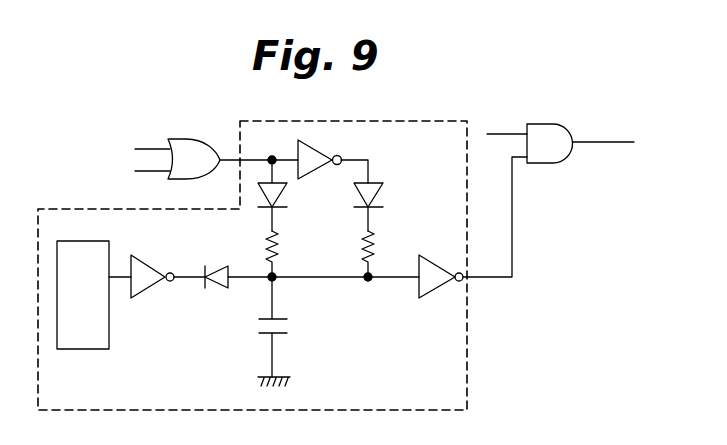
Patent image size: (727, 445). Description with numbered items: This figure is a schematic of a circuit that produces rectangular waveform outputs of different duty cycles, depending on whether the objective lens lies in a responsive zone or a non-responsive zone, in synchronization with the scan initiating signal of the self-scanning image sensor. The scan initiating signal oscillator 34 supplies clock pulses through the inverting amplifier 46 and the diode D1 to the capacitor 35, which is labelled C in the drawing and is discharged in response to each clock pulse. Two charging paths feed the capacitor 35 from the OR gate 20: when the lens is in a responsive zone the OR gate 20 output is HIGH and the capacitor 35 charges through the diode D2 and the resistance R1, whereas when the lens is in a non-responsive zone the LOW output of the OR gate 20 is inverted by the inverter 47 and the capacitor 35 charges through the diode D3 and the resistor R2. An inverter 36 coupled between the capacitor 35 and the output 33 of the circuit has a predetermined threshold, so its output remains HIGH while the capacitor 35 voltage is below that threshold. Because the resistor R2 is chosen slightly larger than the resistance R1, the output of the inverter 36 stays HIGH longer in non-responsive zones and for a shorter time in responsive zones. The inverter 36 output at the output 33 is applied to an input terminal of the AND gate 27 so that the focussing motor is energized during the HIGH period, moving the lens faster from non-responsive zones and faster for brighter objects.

The OR gate 20 is at (205, 112).
The inverter 47 is at (312, 155).
The AND gate 27 is at (550, 156).
The scan initiating signal oscillator 34 is at (108, 336).
The inverting amplifier 46 is at (150, 278).
The capacitor 35 is at (290, 325).
The inverter 36 is at (433, 281).
The output 33 is at (497, 279).
The diode D1 is at (218, 265).
The diode D2 is at (288, 195).
The diode D3 is at (383, 207).
The resistance R1 is at (289, 254).
The resistor R2 is at (384, 254).
The capacitor C is at (264, 362).